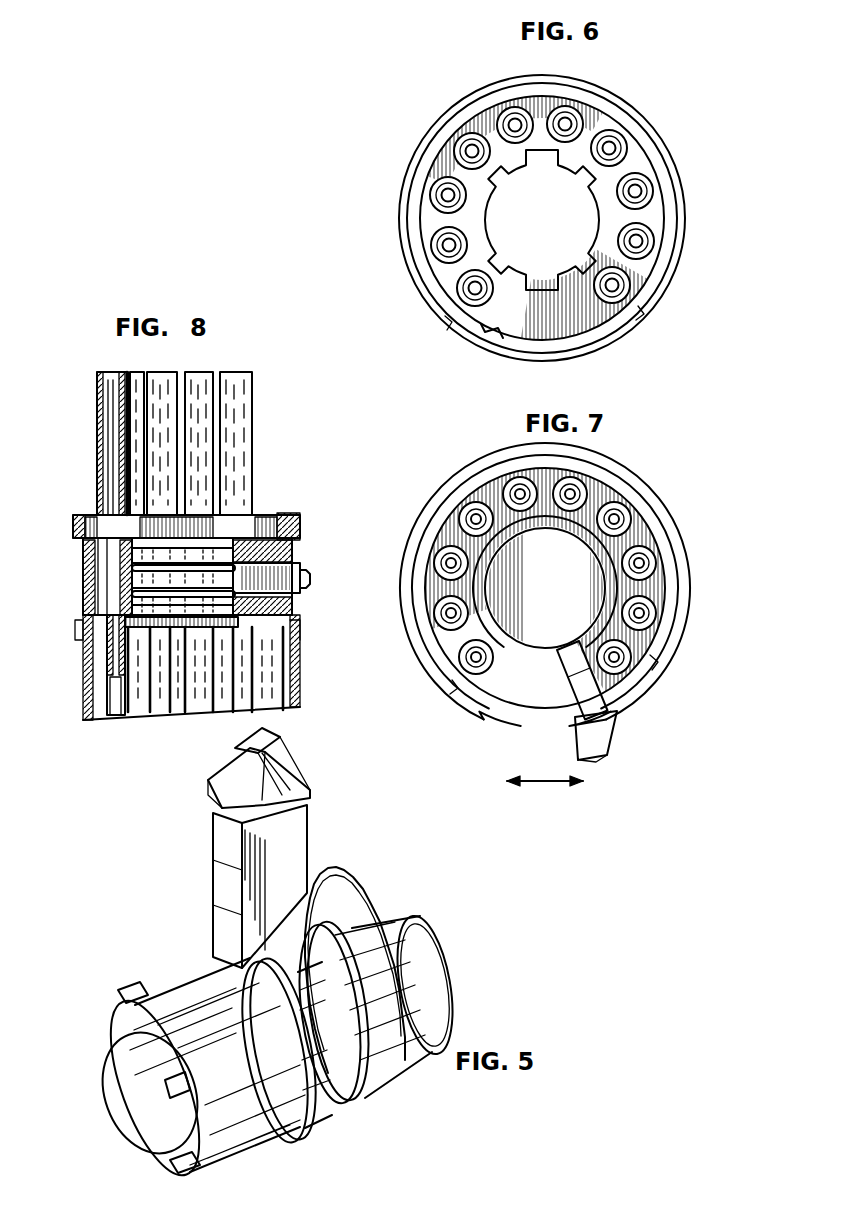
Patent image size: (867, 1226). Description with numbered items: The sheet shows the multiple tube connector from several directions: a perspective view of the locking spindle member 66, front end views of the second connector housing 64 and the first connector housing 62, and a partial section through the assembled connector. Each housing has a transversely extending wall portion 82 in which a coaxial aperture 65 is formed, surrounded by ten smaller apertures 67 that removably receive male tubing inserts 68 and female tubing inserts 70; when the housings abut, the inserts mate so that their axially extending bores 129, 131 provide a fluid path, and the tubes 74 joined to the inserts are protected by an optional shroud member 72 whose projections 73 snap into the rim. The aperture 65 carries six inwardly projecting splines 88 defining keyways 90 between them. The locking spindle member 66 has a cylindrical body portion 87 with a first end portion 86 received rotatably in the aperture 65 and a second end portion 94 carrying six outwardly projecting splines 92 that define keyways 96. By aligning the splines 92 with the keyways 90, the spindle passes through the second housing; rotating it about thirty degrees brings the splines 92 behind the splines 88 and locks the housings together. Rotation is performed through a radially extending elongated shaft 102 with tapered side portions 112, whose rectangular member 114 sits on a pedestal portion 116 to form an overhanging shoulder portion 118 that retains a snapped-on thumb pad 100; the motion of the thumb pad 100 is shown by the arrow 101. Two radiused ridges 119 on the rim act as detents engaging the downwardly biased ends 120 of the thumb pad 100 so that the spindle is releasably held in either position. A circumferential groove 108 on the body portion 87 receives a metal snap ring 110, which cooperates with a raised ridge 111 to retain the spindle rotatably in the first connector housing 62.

In FIG. 7, the first connector housing 62 is at (597, 462).
In FIG. 8, the first connector housing 62 is at (90, 597).
In FIG. 6, the second connector housing 64 is at (645, 130).
In FIG. 8, the second connector housing 64 is at (77, 518).
In FIG. 6, the aperture 65 is at (563, 240).
In FIG. 7, the locking spindle member 66 is at (568, 588).
In FIG. 8, the locking spindle member 66 is at (218, 517).
In FIG. 5, the locking spindle member 66 is at (182, 898).
In FIG. 6, the apertures 67 is at (473, 345).
In FIG. 8, the apertures 67 is at (125, 570).
In FIG. 6, the male tubing inserts 68 is at (448, 257).
In FIG. 8, the male tubing inserts 68 is at (110, 600).
In FIG. 7, the female tubing inserts 70 is at (460, 560).
In FIG. 8, the female tubing inserts 70 is at (90, 557).
In FIG. 8, the shroud member 72 is at (82, 690).
In FIG. 8, the projections 73 is at (77, 623).
In FIG. 8, the tubes 74 is at (237, 422).
In FIG. 6, the wall portion 82 is at (503, 150).
In FIG. 7, the wall portion 82 is at (497, 695).
In FIG. 5, the first end portion 86 is at (380, 902).
In FIG. 5, the cylindrical body portion 87 is at (260, 1097).
In FIG. 6, the splines 88 is at (478, 222).
In FIG. 6, the keyways 90 is at (493, 187).
In FIG. 7, the splines 92 is at (430, 665).
In FIG. 5, the splines 92 is at (120, 990).
In FIG. 5, the second end portion 94 is at (137, 1083).
In FIG. 7, the keyways 96 is at (486, 600).
In FIG. 5, the keyways 96 is at (170, 1160).
In FIG. 7, the thumb pad 100 is at (590, 738).
In FIG. 8, the thumb pad 100 is at (273, 578).
In FIG. 7, the arrow 101 is at (552, 783).
In FIG. 7, the elongated shaft 102 is at (568, 683).
In FIG. 8, the elongated shaft 102 is at (292, 547).
In FIG. 5, the elongated shaft 102 is at (283, 852).
In FIG. 5, the groove 108 is at (393, 963).
In FIG. 8, the snap ring 110 is at (250, 520).
In FIG. 5, the raised ridge 111 is at (353, 1097).
In FIG. 5, the tapered side portions 112 is at (238, 782).
In FIG. 7, the rectangular member 114 is at (597, 758).
In FIG. 8, the rectangular member 114 is at (320, 577).
In FIG. 5, the rectangular member 114 is at (265, 738).
In FIG. 5, the pedestal portion 116 is at (280, 767).
In FIG. 5, the overhanging shoulder portion 118 is at (295, 787).
In FIG. 6, the radiused ridges 119 is at (450, 322).
In FIG. 7, the radiused ridges 119 is at (448, 687).
In FIG. 7, the downwardly biased ends 120 is at (503, 730).
In FIG. 6, the bore 129 is at (440, 247).
In FIG. 8, the bore 129 is at (113, 547).
In FIG. 7, the bore 131 is at (451, 563).
In FIG. 8, the bore 131 is at (115, 655).